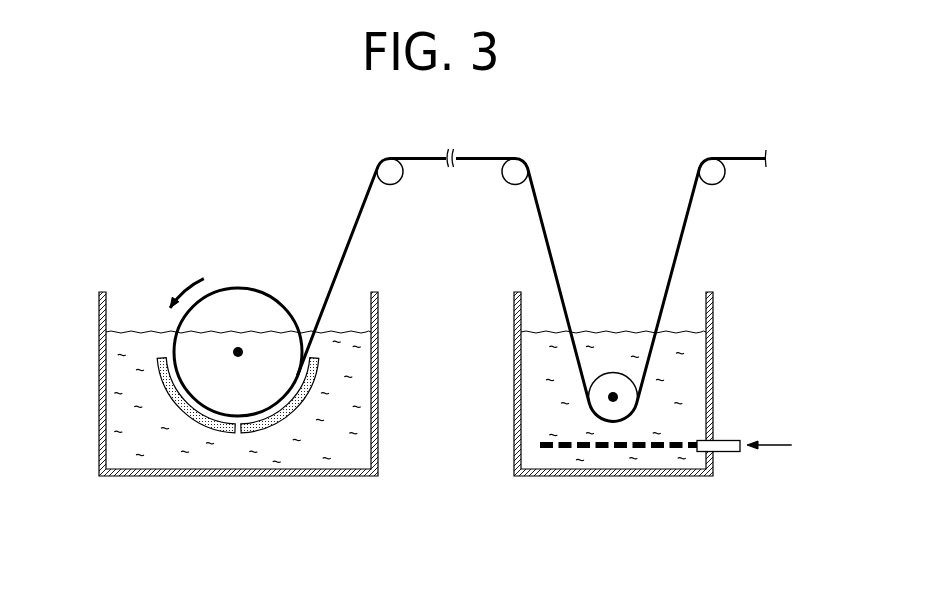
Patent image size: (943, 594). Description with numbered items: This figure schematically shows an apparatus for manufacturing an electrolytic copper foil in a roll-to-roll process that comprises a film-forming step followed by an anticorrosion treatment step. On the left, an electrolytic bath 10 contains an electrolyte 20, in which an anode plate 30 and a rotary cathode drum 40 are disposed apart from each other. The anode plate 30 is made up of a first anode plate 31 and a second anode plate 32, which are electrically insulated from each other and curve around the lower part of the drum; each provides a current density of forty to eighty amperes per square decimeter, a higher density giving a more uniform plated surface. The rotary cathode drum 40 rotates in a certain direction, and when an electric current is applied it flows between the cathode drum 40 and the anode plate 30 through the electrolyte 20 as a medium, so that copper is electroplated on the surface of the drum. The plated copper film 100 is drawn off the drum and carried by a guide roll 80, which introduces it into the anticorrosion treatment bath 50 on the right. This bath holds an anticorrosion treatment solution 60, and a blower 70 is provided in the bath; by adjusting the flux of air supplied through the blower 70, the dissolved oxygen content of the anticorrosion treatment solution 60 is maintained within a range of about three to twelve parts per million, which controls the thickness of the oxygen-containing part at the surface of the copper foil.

The electrolytic bath 10 is at (98, 402).
The electrolyte 20 is at (350, 423).
The anode plate 30 is at (238, 461).
The first anode plate 31 is at (205, 425).
The second anode plate 32 is at (275, 423).
The rotary cathode drum 40 is at (250, 288).
The anticorrosion treatment bath 50 is at (514, 397).
The anticorrosion treatment solution 60 is at (695, 383).
The blower 70 is at (567, 450).
The guide roll 80 is at (615, 413).
The electrode substrate 100 is at (360, 207).